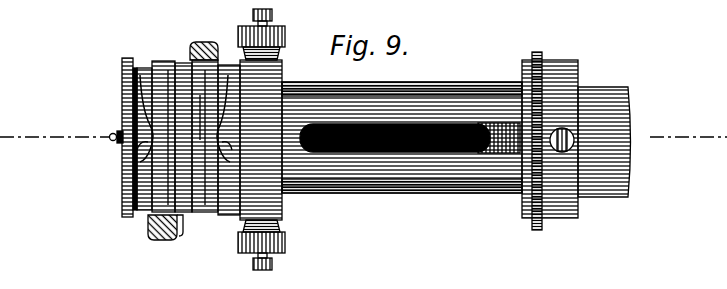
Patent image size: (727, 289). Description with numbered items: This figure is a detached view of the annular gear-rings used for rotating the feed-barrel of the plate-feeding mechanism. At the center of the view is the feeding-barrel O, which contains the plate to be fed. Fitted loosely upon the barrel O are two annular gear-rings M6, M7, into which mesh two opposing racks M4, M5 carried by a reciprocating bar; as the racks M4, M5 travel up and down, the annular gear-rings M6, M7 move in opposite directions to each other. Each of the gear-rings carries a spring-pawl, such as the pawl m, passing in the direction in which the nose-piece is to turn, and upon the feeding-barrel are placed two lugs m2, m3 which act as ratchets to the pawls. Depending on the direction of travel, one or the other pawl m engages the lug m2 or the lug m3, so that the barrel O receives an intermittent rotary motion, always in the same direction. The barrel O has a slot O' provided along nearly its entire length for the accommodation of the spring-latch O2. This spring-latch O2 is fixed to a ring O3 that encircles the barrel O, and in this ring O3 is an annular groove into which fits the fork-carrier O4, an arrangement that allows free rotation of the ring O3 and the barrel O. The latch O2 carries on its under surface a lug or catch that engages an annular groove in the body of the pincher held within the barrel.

The spring-pawl m is at (137, 148).
The lug m2 is at (119, 131).
The lug m3 is at (226, 130).
The rack M4 is at (160, 237).
The rack M5 is at (204, 118).
The annular gear-ring M6 is at (160, 128).
The annular gear-ring M7 is at (185, 224).
The feeding-barrel O is at (402, 150).
The slot O' is at (652, 142).
The spring-latch O2 is at (499, 138).
The ring O3 is at (562, 131).
The fork-carrier O4 is at (535, 140).